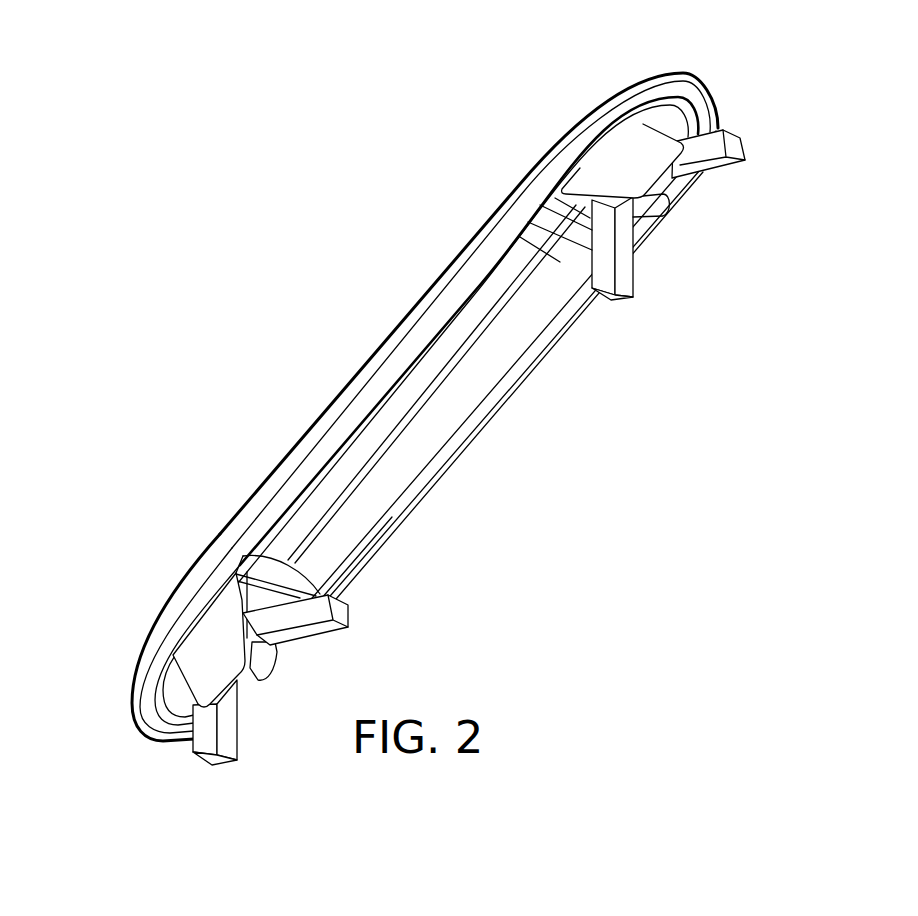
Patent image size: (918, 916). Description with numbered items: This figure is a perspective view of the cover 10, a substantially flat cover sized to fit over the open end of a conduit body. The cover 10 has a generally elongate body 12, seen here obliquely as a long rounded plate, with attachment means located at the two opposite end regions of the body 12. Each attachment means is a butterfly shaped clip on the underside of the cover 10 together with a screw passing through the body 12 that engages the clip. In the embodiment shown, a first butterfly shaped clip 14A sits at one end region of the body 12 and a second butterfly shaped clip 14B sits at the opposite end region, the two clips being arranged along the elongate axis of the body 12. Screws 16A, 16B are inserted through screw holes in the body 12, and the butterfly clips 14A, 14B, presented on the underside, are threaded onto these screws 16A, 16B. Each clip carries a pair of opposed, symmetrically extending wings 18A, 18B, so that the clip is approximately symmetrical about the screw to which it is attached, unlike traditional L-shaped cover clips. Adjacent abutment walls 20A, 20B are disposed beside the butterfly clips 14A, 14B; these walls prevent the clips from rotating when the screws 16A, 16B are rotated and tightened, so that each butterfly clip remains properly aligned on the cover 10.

The cover 10 is at (415, 405).
The elongate body 12 is at (407, 320).
The butterfly shaped clip 14A is at (660, 205).
The butterfly shaped clip 14B is at (260, 675).
The screw 16A is at (622, 158).
The screw 16B is at (210, 665).
The wings 18A is at (712, 167).
The wings 18B is at (312, 630).
The abutment wall 20A is at (645, 153).
The abutment wall 20B is at (205, 662).